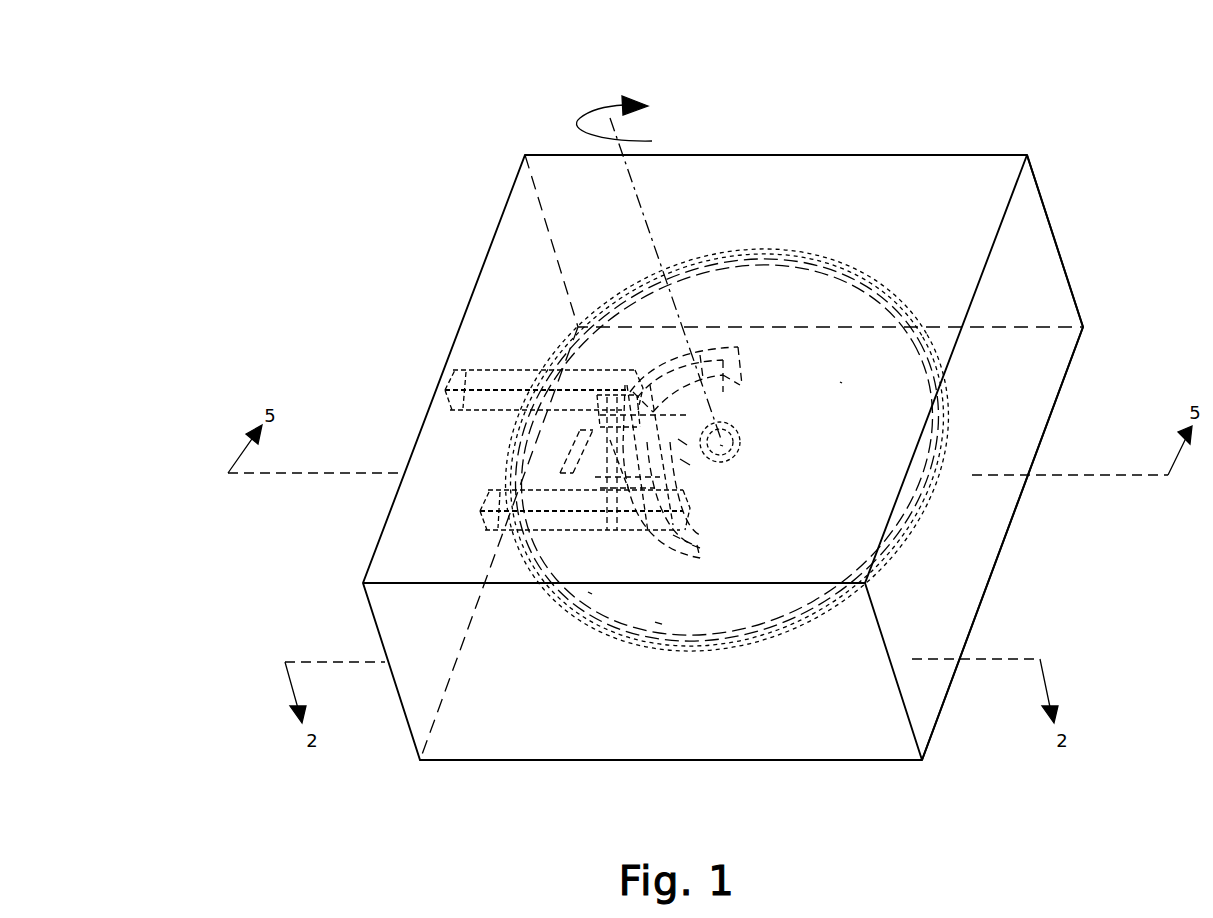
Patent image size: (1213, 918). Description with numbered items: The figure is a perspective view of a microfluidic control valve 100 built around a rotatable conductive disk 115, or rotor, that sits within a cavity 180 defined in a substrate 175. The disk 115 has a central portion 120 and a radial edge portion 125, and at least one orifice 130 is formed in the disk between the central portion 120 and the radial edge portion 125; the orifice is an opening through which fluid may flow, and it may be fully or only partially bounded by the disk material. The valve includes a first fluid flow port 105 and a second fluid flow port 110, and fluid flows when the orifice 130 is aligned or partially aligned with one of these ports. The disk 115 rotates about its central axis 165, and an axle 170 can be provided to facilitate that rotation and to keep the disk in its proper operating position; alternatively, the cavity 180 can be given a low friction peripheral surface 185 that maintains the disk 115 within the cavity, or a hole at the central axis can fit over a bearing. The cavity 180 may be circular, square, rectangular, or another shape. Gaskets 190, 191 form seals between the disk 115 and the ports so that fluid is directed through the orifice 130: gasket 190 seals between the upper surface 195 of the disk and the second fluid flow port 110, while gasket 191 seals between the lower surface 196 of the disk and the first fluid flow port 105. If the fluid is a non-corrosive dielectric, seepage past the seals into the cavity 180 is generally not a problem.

The control valve 100 is at (340, 218).
The first fluid flow port 105 is at (613, 457).
The second fluid flow port 110 is at (615, 432).
The rotatable conductive disk 115 is at (840, 382).
The central portion 120 is at (750, 430).
The radial edge portion 125 is at (917, 420).
The orifice 130 is at (740, 360).
The central axis 165 is at (647, 223).
The axle 170 is at (720, 445).
The substrate 175 is at (1055, 292).
The cavity 180 is at (513, 543).
The low friction peripheral surface 185 is at (578, 358).
The gasket 190 is at (685, 462).
The gasket 191 is at (682, 442).
The upper surface 195 is at (590, 593).
The lower surface 196 is at (658, 623).